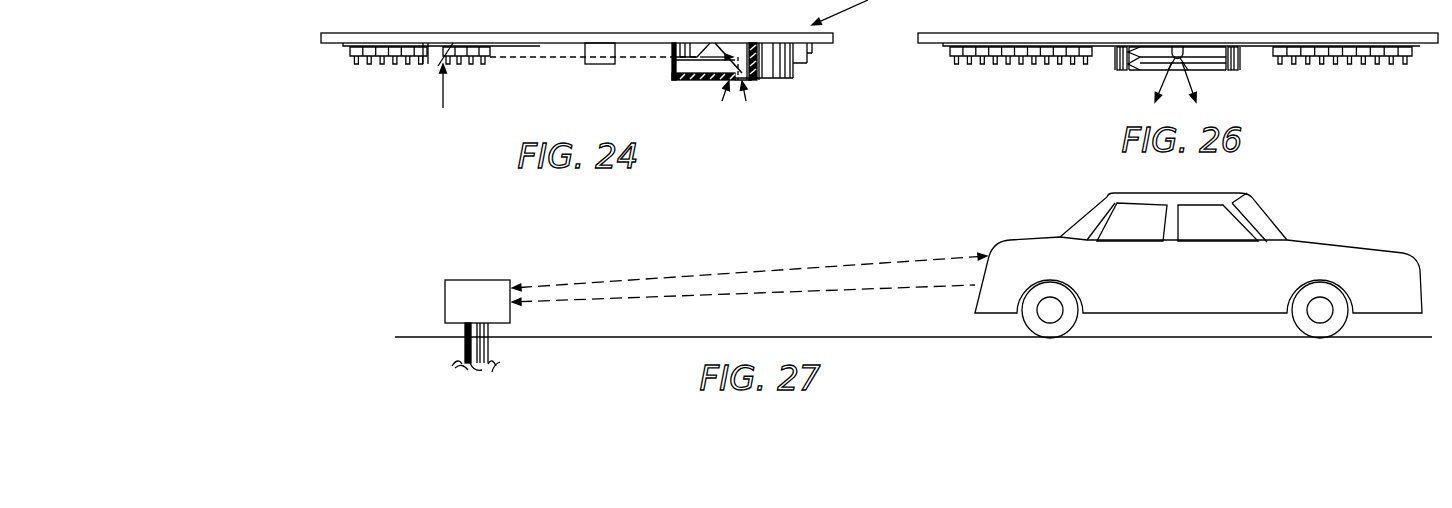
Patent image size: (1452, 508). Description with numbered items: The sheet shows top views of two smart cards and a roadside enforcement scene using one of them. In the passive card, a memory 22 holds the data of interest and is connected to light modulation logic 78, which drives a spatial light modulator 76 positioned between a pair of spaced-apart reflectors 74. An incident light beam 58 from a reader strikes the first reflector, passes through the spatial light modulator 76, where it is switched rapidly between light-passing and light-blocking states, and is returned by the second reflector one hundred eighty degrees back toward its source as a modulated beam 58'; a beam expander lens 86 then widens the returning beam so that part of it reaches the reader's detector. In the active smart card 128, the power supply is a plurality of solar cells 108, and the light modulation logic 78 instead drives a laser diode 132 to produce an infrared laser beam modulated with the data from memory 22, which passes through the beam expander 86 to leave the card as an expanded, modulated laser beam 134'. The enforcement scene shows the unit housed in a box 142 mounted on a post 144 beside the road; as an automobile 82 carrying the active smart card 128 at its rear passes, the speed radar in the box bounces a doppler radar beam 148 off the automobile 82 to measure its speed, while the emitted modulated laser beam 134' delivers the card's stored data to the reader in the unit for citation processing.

In FIG. 24, the memory 22 is at (393, 64).
In FIG. 26, the memory 22 is at (1004, 62).
In FIG. 24, the light beam 58 is at (466, 97).
In FIG. 24, the modulated beam 58' is at (716, 89).
In FIG. 24, the reflectors 74 is at (438, 66).
In FIG. 24, the spatial light modulator 76 is at (600, 66).
In FIG. 24, the light modulation logic 78 is at (808, 58).
In FIG. 26, the light modulation logic 78 is at (1374, 66).
In FIG. 27, the automobile 82 is at (1107, 197).
In FIG. 24, the beam expander lens 86 is at (761, 80).
In FIG. 26, the beam expander lens 86 is at (1147, 72).
In FIG. 24, the solar cells 108 is at (353, 47).
In FIG. 26, the solar cells 108 is at (945, 47).
In FIG. 26, the active smart card 128 is at (1328, 27).
In FIG. 27, the active smart card 128 is at (975, 288).
In FIG. 26, the laser diode 132 is at (1182, 48).
In FIG. 26, the expanded modulated laser beam 134' is at (1223, 82).
In FIG. 27, the expanded modulated laser beam 134' is at (743, 258).
In FIG. 27, the box 142 is at (497, 280).
In FIG. 27, the post 144 is at (466, 343).
In FIG. 27, the doppler radar beam 148 is at (870, 260).